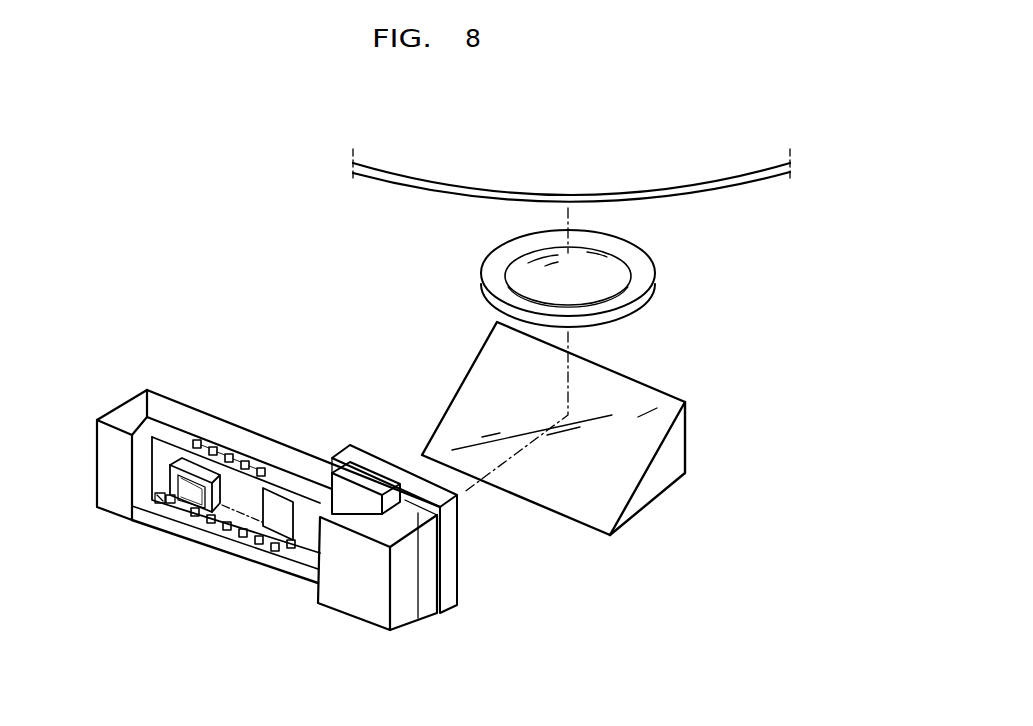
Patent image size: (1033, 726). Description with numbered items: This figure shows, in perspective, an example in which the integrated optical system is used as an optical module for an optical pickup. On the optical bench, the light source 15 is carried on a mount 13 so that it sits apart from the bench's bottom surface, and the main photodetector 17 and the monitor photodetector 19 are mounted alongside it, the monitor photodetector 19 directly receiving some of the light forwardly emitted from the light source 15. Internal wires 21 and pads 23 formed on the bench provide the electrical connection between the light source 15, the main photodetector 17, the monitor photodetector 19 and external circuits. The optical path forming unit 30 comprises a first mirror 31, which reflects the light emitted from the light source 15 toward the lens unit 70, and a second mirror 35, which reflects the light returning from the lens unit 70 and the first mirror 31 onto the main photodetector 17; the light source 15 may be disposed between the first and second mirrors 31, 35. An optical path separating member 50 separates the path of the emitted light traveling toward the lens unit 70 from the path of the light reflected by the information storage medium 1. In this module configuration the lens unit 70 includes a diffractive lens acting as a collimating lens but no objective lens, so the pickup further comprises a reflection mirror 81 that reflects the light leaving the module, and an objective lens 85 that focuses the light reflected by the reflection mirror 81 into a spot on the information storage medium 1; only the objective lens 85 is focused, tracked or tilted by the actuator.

The information storage medium 1 is at (727, 163).
The objective lens 85 is at (650, 297).
The reflection mirror 81 is at (638, 417).
The lens unit 70 is at (452, 577).
The optical path separating member 50 is at (365, 488).
The optical path forming unit 30 is at (262, 515).
The first mirror 31 is at (297, 568).
The second mirror 35 is at (140, 483).
The light source 15 is at (188, 493).
The mount 13 is at (215, 505).
The main photodetector 17 is at (160, 500).
The monitor photodetector 19 is at (277, 517).
The pads 23 is at (230, 454).
The internal wires 21 is at (197, 440).